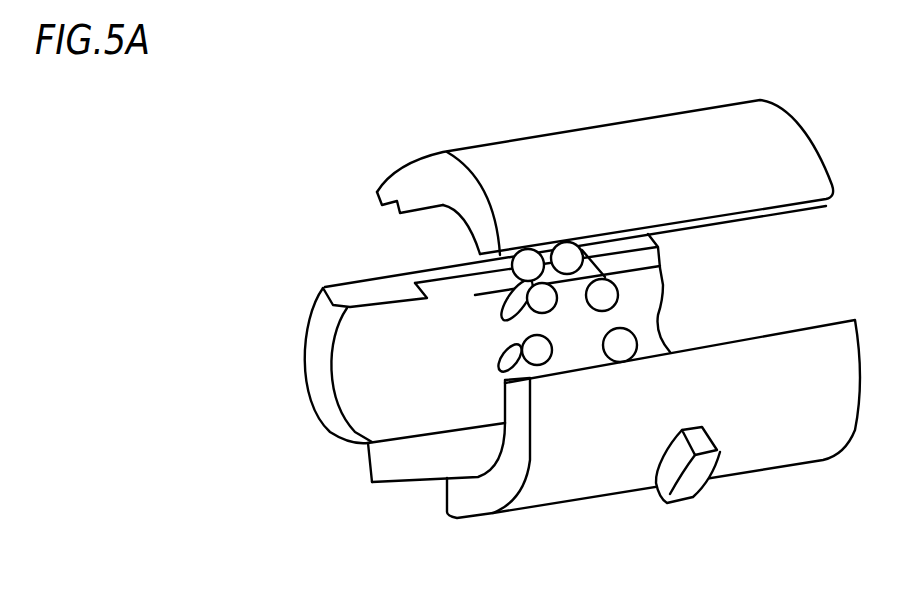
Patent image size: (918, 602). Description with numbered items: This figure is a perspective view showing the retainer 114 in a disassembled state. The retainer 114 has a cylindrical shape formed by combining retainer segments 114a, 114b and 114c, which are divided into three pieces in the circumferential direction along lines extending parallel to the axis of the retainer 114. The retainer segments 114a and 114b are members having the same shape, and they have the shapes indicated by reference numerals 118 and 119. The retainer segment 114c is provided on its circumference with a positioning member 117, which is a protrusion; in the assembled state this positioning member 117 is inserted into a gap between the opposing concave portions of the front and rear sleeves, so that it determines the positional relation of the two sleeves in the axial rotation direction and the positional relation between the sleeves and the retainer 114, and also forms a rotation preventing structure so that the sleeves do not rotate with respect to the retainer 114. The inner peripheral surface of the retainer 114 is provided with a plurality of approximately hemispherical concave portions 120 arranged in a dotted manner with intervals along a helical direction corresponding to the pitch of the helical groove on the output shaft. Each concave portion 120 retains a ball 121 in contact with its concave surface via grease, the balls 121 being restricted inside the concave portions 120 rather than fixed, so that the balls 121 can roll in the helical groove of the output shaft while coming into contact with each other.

The retainer 114 is at (185, 118).
The retainer segment 114a is at (515, 193).
The retainer segment 114b is at (433, 352).
The retainer segment 114c is at (527, 441).
The positioning member 117 is at (692, 477).
The shape of retainer segment 118 is at (393, 212).
The shape of retainer segment 119 is at (333, 284).
The concave portion 120 is at (533, 366).
The ball 121 is at (552, 346).